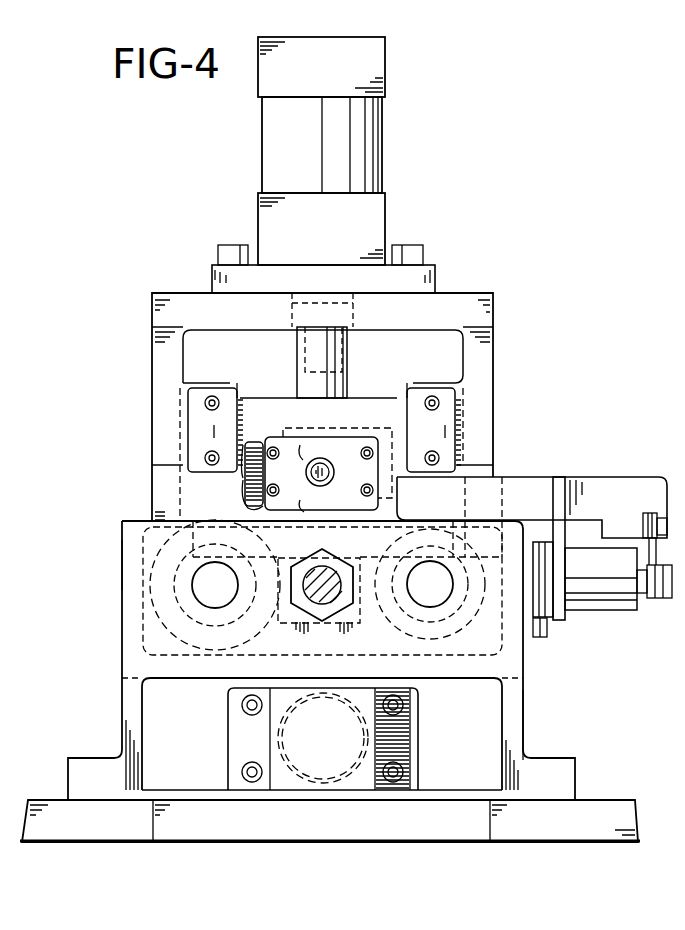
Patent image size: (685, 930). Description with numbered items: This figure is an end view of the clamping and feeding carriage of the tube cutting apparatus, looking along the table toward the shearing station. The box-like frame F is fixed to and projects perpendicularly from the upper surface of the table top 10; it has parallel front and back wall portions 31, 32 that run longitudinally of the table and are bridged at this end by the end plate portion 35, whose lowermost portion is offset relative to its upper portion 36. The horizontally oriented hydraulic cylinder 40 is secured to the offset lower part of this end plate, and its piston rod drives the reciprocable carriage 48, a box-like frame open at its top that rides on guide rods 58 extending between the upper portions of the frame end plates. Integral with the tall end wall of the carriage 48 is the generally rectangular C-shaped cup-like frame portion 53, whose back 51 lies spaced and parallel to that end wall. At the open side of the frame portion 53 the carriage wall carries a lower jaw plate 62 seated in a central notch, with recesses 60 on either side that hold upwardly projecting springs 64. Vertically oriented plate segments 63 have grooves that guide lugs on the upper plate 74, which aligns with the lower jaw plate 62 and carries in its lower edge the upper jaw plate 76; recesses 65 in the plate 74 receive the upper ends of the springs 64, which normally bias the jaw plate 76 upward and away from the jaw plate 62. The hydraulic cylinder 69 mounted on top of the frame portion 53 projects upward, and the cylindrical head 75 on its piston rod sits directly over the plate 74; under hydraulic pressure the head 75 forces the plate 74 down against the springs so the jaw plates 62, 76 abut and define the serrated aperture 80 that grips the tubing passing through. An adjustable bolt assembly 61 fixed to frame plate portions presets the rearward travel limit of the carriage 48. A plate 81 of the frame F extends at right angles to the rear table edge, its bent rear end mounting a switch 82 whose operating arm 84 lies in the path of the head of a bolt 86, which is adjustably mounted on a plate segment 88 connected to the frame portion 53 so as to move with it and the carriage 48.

The table top 10 is at (55, 815).
The front wall portion 31 is at (122, 718).
The back wall portion 32 is at (523, 702).
The end plate portion 35 is at (120, 612).
The upper portion of end plate portion 36 is at (147, 521).
The hydraulic cylinder 40 is at (312, 750).
The reciprocable carriage 48 is at (160, 622).
The back of cup-like frame 51 is at (463, 348).
The C-shaped cup-like frame portion 53 is at (468, 310).
The guide rods 58 is at (205, 598).
The recesses 60 is at (248, 509).
The bolt assembly 61 is at (333, 556).
The lower jaw plate 62 is at (308, 511).
The plate segments 63 is at (412, 447).
The springs 64 is at (243, 481).
The recesses in plate 65 is at (256, 442).
The hydraulic cylinder 69 is at (298, 146).
The upper plate 74 is at (366, 440).
The cylindrical head 75 is at (347, 372).
The upper jaw plate 76 is at (300, 446).
The aperture 80 is at (320, 458).
The plate 81 is at (545, 637).
The switch 82 is at (637, 597).
The operating arm 84 is at (647, 570).
The bolt 86 is at (645, 522).
The plate segment 88 is at (610, 486).
The box-like frame F is at (120, 565).